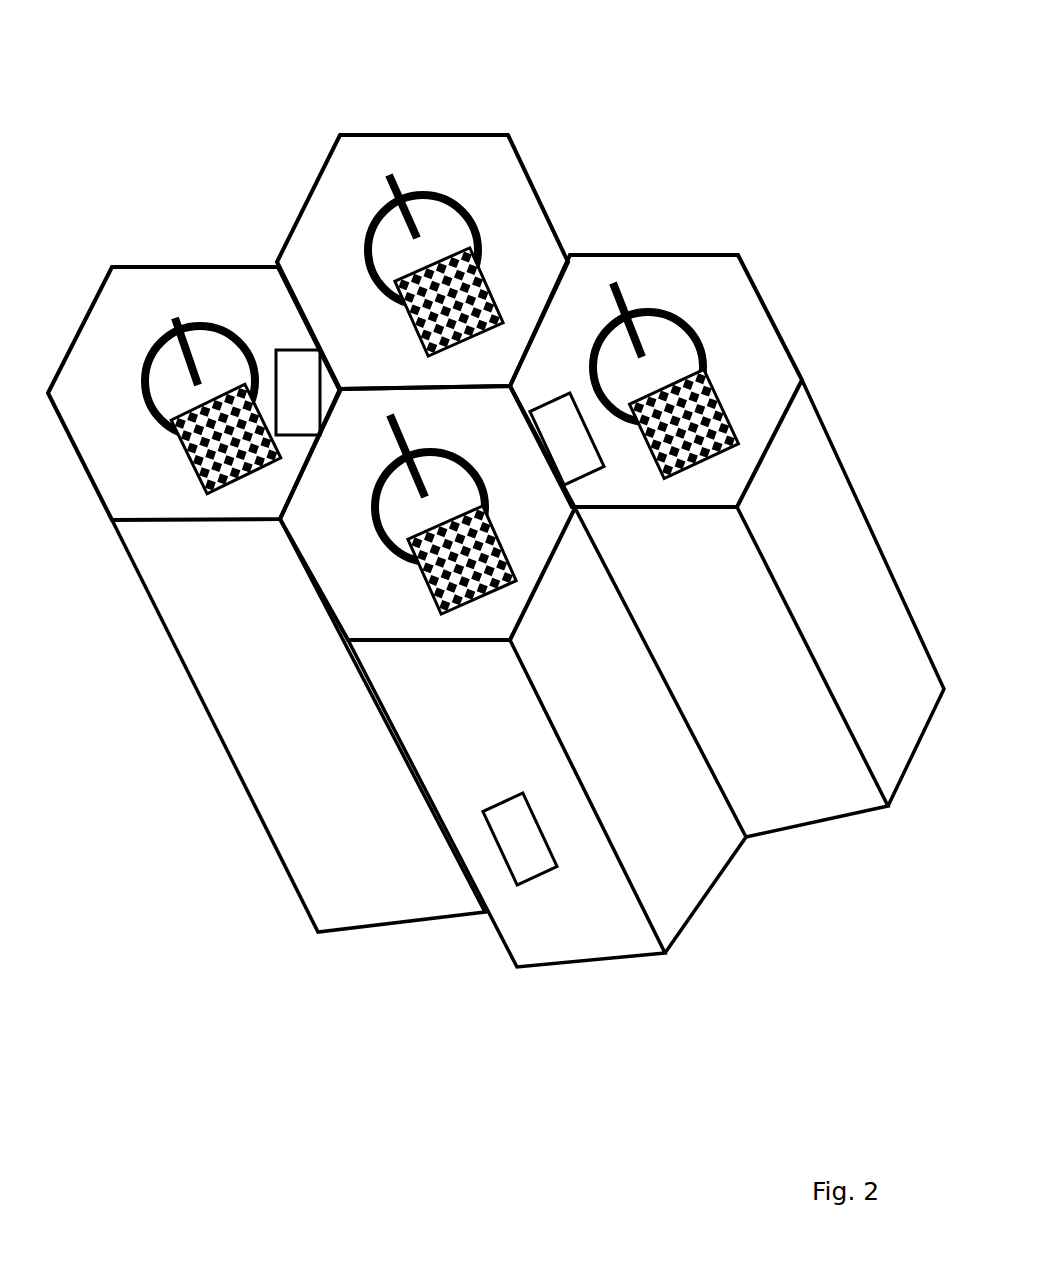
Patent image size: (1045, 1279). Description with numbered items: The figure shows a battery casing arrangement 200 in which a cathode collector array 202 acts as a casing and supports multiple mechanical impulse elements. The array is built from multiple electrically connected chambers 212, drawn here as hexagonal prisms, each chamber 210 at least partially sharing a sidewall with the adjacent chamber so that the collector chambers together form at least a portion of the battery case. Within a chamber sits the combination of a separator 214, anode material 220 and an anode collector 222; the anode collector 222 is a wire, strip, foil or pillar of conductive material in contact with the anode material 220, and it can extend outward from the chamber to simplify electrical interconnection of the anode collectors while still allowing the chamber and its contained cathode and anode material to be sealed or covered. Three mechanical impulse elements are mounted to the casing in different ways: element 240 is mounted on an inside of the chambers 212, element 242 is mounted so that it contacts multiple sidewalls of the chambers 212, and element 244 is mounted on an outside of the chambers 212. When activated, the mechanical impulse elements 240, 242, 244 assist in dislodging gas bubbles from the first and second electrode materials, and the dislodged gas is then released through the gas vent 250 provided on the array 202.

The modular hexagonal cell array 200 is at (138, 83).
The cathode collector array 202 is at (179, 560).
The first hexagonal cell 210 is at (130, 308).
The multiple electrically connected chambers 212 is at (683, 236).
The separator 214 is at (487, 238).
The anode material 220 is at (387, 243).
The anode collector 222 is at (398, 192).
The mechanical impulse element 240 is at (548, 390).
The mechanical impulse element 242 is at (283, 350).
The mechanical impulse element 244 is at (495, 857).
The gas vent 250 is at (710, 422).